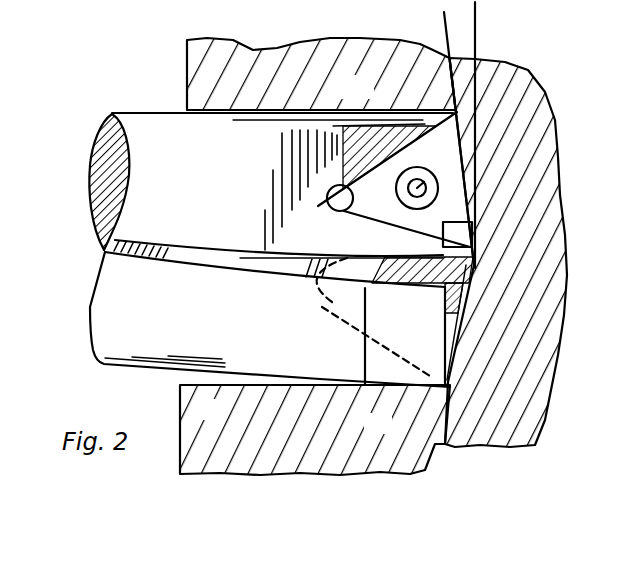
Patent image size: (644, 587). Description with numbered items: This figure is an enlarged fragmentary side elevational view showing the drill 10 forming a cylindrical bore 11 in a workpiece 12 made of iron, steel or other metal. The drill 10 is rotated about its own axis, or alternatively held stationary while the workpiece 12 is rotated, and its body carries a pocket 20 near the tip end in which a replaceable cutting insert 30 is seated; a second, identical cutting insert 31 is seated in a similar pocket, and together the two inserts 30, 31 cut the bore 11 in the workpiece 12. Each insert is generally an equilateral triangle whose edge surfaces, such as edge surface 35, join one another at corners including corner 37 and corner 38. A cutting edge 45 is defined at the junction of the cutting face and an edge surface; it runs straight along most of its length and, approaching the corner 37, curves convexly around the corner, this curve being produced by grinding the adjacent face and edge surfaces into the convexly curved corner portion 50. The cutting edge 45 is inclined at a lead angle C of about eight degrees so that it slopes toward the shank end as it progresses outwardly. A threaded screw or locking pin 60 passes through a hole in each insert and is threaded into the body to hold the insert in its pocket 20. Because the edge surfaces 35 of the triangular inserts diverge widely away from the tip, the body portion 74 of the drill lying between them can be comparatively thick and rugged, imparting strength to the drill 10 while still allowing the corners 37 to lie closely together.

The drill 10 is at (143, 100).
The cylindrical bore 11 is at (255, 370).
The workpiece 12 is at (433, 440).
The pocket 20 is at (412, 156).
The cutting insert 30 is at (377, 185).
The cutting insert 31 is at (417, 333).
The edge surface 35 is at (352, 236).
The corner 37 is at (440, 256).
The corner 38 is at (327, 200).
The cutting edge 45 is at (462, 190).
The convexly curved corner portion 50 is at (462, 231).
The screw 60 is at (418, 187).
The body portion 74 is at (473, 284).
The lead angle C is at (412, 32).